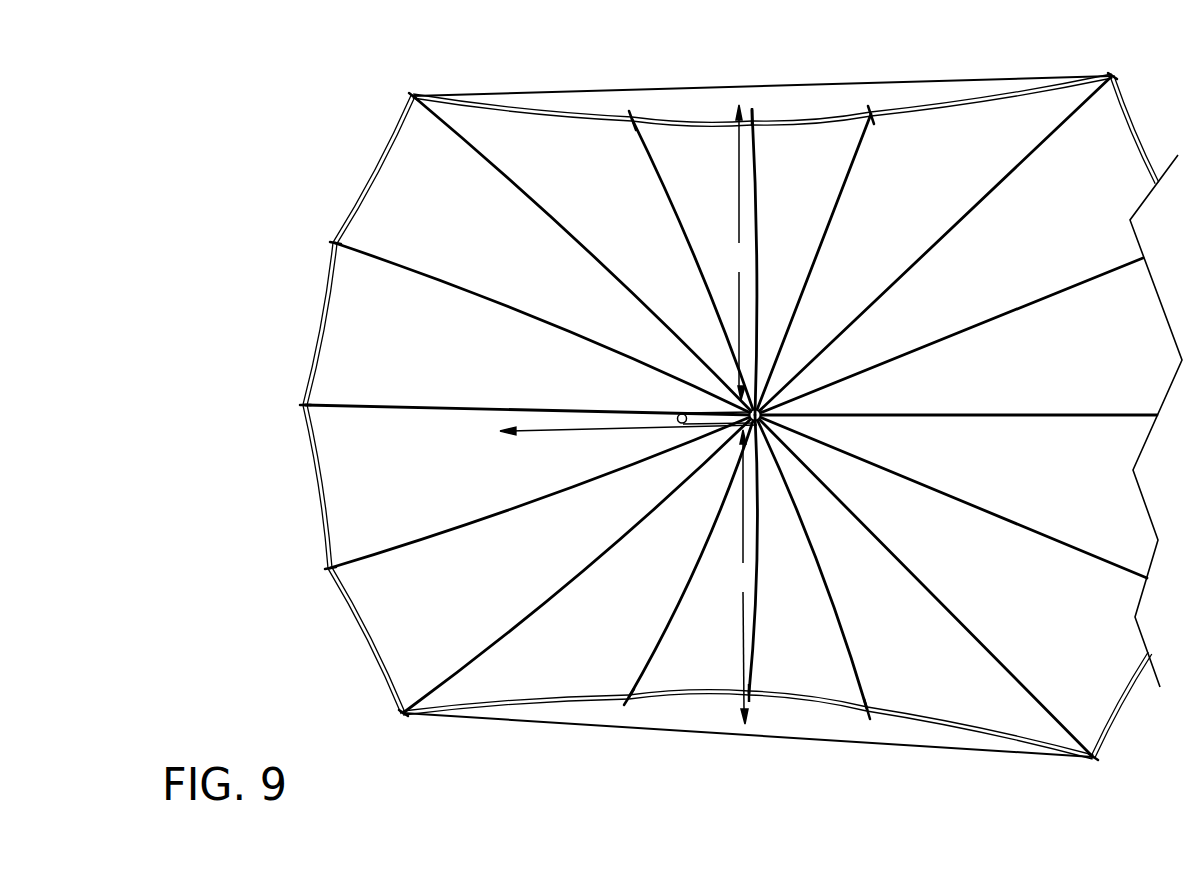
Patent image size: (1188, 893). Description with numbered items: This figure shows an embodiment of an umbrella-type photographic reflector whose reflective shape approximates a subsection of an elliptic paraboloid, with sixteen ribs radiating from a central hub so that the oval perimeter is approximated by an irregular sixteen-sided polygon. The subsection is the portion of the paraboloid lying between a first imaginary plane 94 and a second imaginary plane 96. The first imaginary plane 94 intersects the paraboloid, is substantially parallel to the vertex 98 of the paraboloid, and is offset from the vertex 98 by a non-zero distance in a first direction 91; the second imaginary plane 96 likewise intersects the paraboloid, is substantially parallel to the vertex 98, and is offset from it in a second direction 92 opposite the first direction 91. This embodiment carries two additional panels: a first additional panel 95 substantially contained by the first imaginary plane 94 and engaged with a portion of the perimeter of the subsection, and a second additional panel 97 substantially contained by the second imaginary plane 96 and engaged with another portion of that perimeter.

The first direction 91 is at (742, 260).
The second direction 92 is at (743, 569).
The first imaginary plane 94 is at (697, 78).
The first additional panel 95 is at (810, 83).
The second imaginary plane 96 is at (588, 737).
The second additional panel 97 is at (765, 740).
The vertex 98 is at (578, 433).